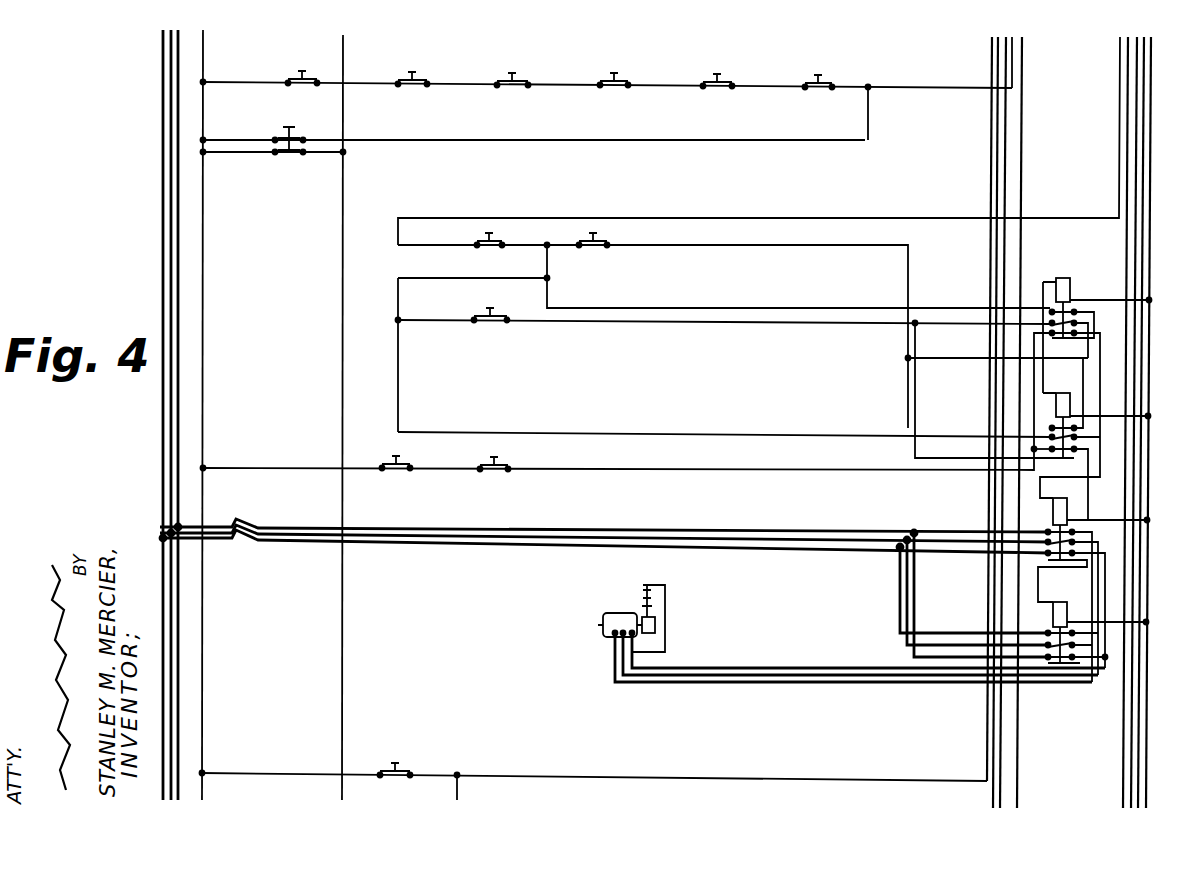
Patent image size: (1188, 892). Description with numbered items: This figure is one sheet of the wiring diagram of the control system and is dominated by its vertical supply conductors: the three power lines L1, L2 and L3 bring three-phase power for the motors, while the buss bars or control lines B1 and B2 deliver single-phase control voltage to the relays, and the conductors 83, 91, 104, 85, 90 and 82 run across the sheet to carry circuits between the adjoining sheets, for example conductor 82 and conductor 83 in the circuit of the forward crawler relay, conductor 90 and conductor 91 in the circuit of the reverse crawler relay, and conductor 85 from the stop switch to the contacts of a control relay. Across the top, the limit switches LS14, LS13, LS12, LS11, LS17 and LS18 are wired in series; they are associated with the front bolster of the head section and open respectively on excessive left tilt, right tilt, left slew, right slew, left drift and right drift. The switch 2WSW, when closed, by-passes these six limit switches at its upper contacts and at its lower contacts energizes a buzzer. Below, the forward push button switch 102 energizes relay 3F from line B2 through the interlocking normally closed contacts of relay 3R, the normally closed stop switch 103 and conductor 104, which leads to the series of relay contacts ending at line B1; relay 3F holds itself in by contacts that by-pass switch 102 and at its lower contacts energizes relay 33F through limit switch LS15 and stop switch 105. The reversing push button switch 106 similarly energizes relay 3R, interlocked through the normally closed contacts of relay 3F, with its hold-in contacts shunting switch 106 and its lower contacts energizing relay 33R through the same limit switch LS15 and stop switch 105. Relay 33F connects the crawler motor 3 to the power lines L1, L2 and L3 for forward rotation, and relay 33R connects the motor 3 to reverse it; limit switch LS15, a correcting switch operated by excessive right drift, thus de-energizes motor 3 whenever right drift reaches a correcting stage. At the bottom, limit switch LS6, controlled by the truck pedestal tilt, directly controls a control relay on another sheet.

The power line L1 is at (163, 173).
The power line L2 is at (171, 193).
The power line L3 is at (178, 212).
The control line B1 is at (205, 228).
The control line B2 is at (1150, 150).
The conductor 83 is at (1005, 103).
The conductor 91 is at (998, 145).
The conductor 104 is at (1120, 60).
The conductor 85 is at (1128, 86).
The conductor 90 is at (1137, 107).
The conductor 82 is at (1144, 124).
The limit switch LS14 is at (306, 69).
The limit switch LS13 is at (416, 70).
The limit switch LS12 is at (515, 71).
The limit switch LS11 is at (618, 71).
The limit switch LS17 is at (719, 72).
The limit switch LS18 is at (819, 73).
The switch 2WSW is at (533, 132).
The stop switch 103 is at (494, 243).
The forward push button switch 102 is at (598, 243).
The reversing push button switch 106 is at (498, 316).
The stop switch 105 is at (398, 465).
The limit switch LS15 is at (496, 456).
The relay 3F is at (1096, 379).
The reversing relay 3R is at (1097, 439).
The relay 33F is at (1094, 581).
The relay 33R is at (1095, 624).
The motor 3 is at (617, 620).
The limit switch LS6 is at (395, 762).